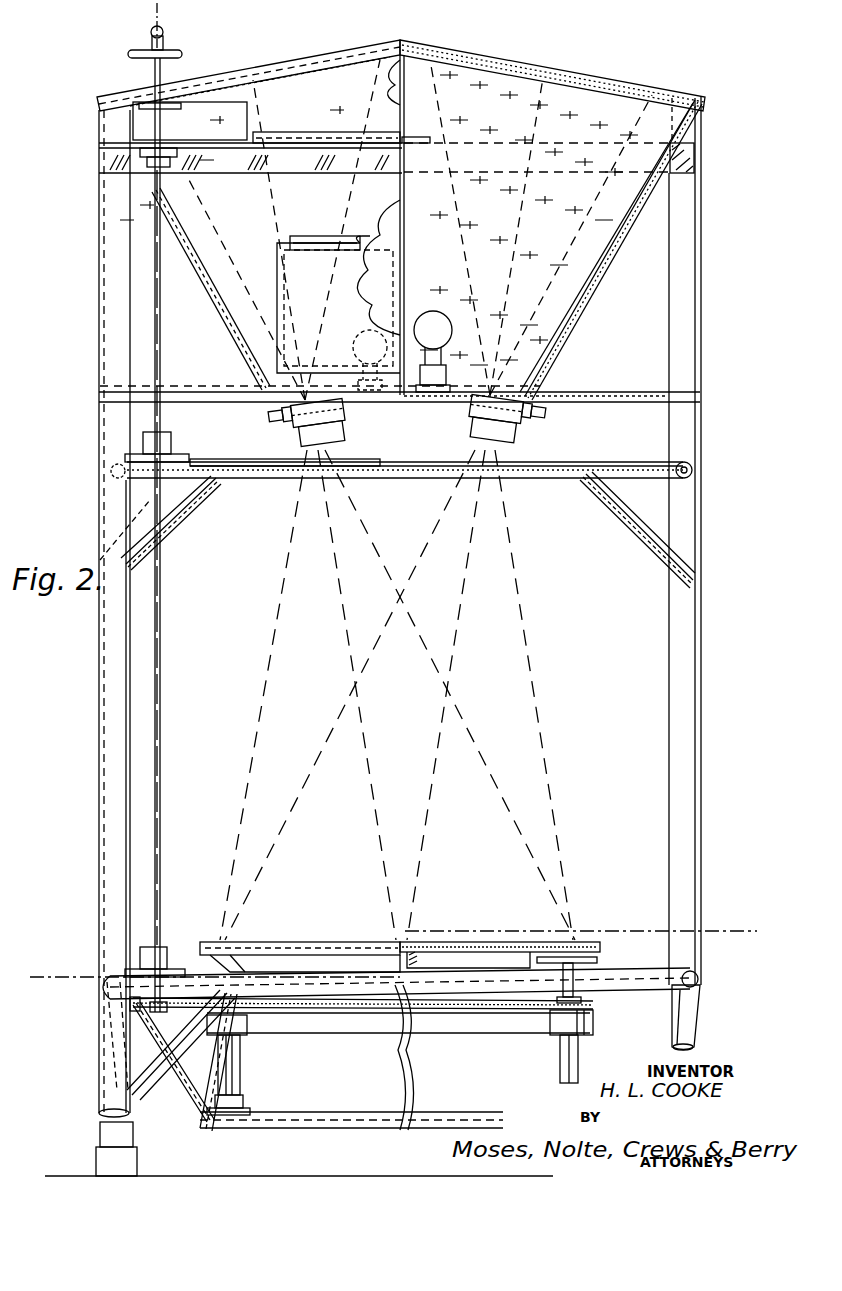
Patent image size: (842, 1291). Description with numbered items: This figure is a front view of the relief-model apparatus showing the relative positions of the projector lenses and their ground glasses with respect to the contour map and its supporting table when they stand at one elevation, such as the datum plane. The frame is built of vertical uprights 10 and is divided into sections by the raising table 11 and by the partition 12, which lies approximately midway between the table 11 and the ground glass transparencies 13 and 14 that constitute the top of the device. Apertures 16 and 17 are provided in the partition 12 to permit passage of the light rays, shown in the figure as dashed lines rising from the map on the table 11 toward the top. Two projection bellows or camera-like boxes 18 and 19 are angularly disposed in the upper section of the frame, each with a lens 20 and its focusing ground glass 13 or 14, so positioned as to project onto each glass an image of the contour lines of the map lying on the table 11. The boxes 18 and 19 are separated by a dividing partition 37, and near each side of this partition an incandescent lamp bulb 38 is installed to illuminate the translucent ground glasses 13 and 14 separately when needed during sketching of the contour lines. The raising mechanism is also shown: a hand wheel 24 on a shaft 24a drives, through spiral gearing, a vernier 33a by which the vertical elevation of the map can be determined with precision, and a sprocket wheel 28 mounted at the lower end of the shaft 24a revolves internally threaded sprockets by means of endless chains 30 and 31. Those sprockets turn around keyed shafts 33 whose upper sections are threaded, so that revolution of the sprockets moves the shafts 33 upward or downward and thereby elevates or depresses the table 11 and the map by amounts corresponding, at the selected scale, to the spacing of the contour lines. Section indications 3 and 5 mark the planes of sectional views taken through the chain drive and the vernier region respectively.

The section line 3- 3 is at (42, 980).
The section line 5- 5 is at (140, 11).
The vertical uprights 10 is at (98, 722).
The raising table 11 is at (264, 940).
The partition 12 is at (233, 461).
The ground glass transparency 13 is at (283, 63).
The ground glass transparency 14 is at (626, 80).
The aperture 16 is at (342, 456).
The aperture 17 is at (511, 452).
The projection bellows or camera-like box 18 is at (183, 196).
The projection bellows or camera-like box 19 is at (612, 233).
The lens 20 is at (468, 418).
The hand wheel 24 is at (166, 46).
The shaft 24a is at (78, 823).
The sprocket wheel 28 is at (133, 1001).
The endless chain 30 is at (163, 1078).
The endless chain 31 is at (333, 1010).
The shaft 33 is at (573, 980).
The vernier 33a is at (166, 112).
The dividing partition 37 is at (408, 92).
The lamp 38 is at (430, 318).